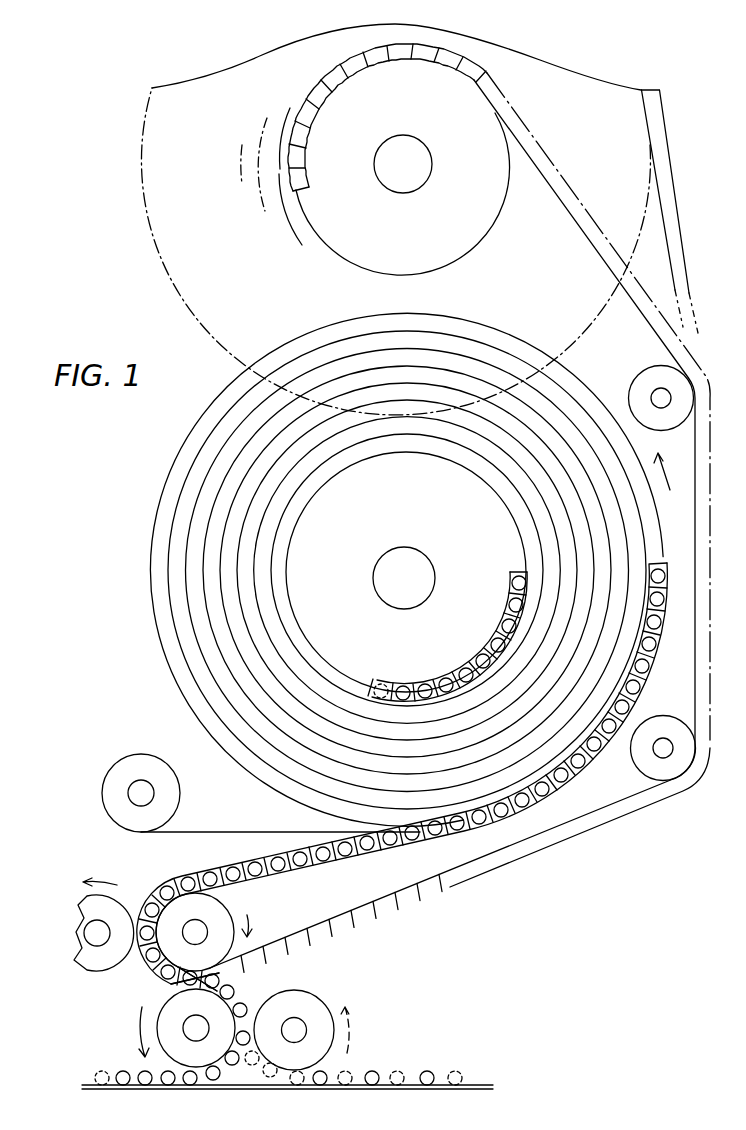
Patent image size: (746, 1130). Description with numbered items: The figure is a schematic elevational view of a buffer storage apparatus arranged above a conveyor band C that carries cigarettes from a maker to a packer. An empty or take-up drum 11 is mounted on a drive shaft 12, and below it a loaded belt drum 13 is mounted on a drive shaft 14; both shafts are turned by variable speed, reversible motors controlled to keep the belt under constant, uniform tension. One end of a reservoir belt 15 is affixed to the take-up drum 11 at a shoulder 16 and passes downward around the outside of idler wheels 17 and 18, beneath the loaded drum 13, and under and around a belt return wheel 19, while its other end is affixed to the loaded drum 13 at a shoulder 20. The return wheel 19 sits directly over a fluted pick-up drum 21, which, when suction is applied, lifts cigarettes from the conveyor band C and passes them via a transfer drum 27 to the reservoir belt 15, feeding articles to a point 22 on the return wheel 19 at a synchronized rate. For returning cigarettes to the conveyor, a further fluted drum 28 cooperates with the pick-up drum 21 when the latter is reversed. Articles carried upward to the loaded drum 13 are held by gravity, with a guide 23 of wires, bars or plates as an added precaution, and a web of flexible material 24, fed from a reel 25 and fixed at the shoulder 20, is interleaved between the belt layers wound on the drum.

The take up drum 11 is at (468, 102).
The drive shaft 12 is at (431, 158).
The loaded belt drum 13 is at (413, 498).
The drive shaft 14 is at (407, 567).
The reservoir belt 15 is at (647, 327).
The shoulder 16 is at (310, 195).
The idler wheel 17 is at (647, 380).
The idler wheel 18 is at (662, 722).
The belt return wheel 19 is at (215, 913).
The shoulder 20 is at (518, 572).
The fluted pick-up drum 21 is at (167, 1030).
The point on wheel 22 is at (177, 983).
The guide 23 is at (190, 873).
The web of flexible material 24 is at (213, 830).
The reel 25 is at (139, 760).
The transfer drum 27 is at (95, 903).
The fluted drum 28 is at (307, 1008).
The conveyor band C is at (480, 1083).